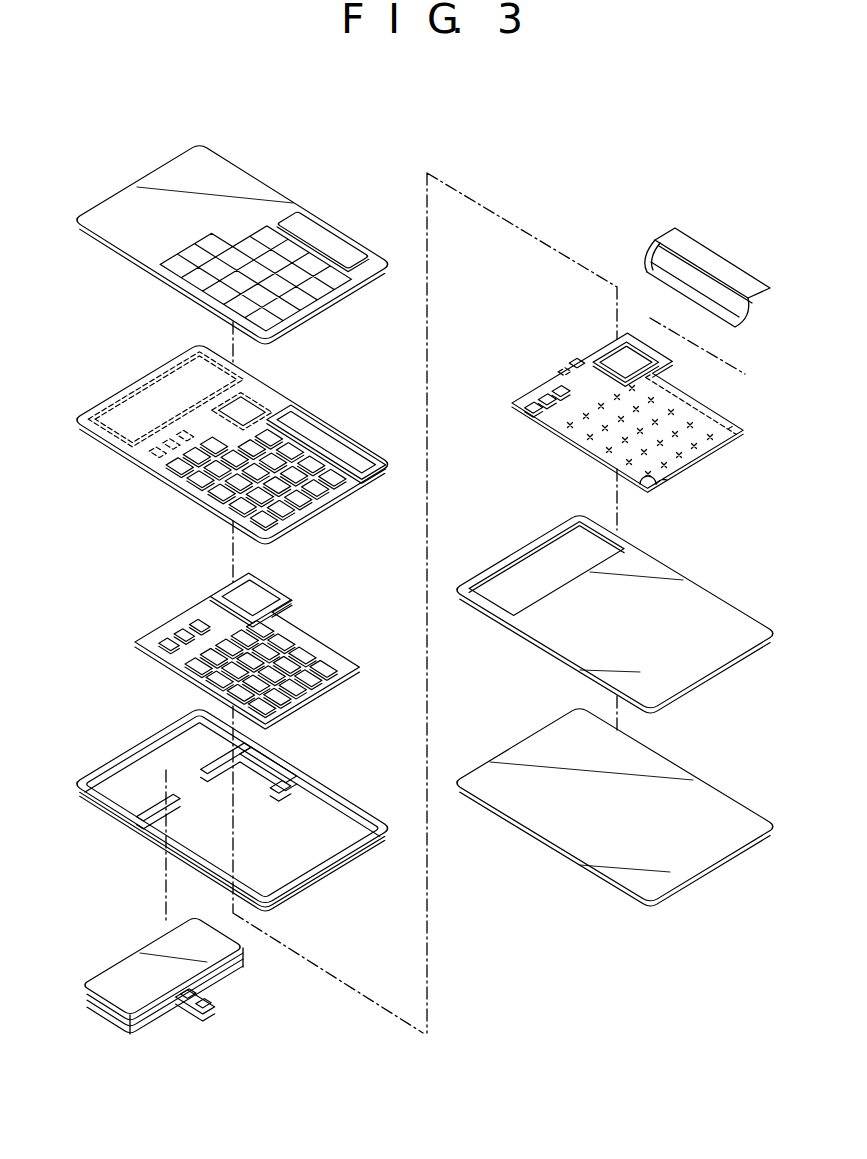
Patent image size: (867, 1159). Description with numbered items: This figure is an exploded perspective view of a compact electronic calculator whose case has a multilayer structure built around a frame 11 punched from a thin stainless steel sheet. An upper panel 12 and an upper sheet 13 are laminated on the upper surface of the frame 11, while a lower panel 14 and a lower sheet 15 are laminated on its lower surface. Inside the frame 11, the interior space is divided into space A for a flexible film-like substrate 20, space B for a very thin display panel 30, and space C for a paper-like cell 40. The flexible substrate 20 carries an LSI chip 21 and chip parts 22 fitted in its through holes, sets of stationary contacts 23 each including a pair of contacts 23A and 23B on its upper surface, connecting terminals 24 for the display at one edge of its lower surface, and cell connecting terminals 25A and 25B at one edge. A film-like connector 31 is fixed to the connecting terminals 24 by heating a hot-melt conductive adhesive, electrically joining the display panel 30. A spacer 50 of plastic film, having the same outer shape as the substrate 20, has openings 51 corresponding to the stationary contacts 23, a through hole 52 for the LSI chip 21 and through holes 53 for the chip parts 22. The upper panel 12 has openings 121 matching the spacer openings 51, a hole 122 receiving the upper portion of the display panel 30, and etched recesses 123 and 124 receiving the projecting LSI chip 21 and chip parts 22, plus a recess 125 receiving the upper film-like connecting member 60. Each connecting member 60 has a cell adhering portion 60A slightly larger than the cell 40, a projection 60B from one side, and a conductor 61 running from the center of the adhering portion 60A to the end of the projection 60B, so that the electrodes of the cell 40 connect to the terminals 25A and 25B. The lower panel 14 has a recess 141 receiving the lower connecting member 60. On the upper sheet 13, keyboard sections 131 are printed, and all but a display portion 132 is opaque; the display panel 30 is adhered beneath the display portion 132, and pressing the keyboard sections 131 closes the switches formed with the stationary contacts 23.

The frame 11 is at (140, 838).
The upper panel 12 is at (296, 403).
The openings 121 is at (178, 480).
The hole 122 is at (345, 444).
The recess 123 is at (256, 404).
The recesses 124 is at (152, 456).
The recess 125 is at (136, 396).
The upper sheet 13 is at (258, 190).
The keyboard sections 131 is at (172, 272).
The display portion 132 is at (336, 247).
The lower panel 14 is at (735, 614).
The recess 141 is at (500, 600).
The lower sheet 15 is at (716, 800).
The flexible film-like substrate 20 is at (700, 455).
The LSI chip 21 is at (660, 366).
The chip parts 22 is at (540, 396).
The stationary contacts 23 is at (580, 442).
The contact 23A is at (645, 490).
The contact 23B is at (665, 480).
The connecting terminals 24 is at (725, 426).
The cell connecting terminal 25A is at (580, 360).
The cell connecting terminal 25B is at (565, 370).
The display panel 30 is at (700, 252).
The film-like connector 31 is at (652, 262).
The paper-like cell 40 is at (100, 1002).
The spacer 50 is at (330, 683).
The openings 51 is at (345, 632).
The through hole 52 is at (226, 592).
The through holes 53 is at (150, 638).
The film-like connecting member 60 is at (118, 963).
The cell adhering portion 60A is at (168, 946).
The projection 60B is at (222, 991).
The conductor 61 is at (220, 1000).
The space A is at (300, 855).
The space B is at (335, 812).
The space C is at (155, 768).